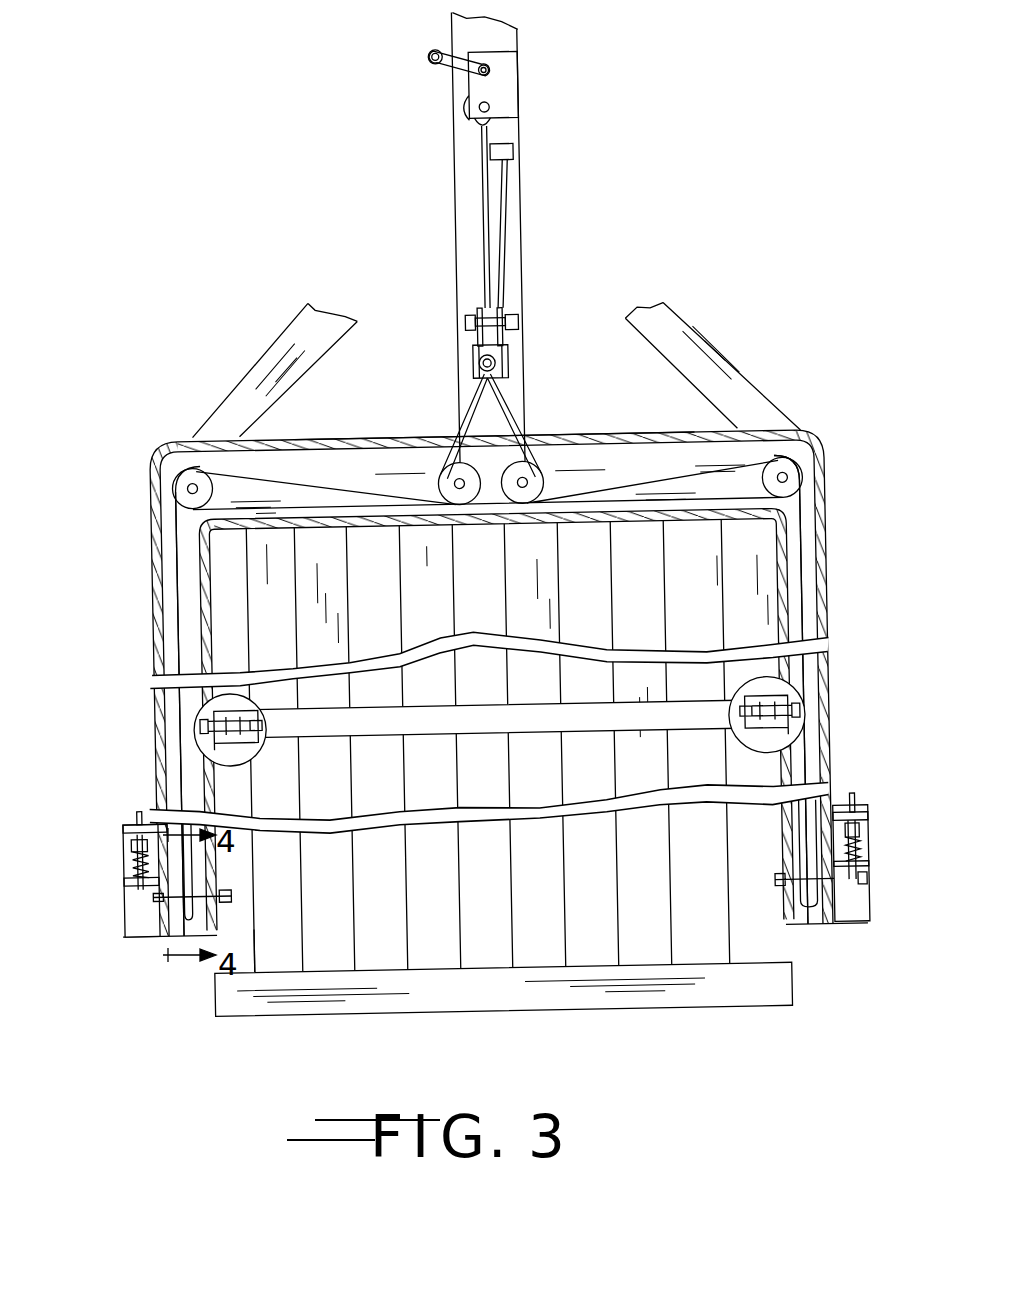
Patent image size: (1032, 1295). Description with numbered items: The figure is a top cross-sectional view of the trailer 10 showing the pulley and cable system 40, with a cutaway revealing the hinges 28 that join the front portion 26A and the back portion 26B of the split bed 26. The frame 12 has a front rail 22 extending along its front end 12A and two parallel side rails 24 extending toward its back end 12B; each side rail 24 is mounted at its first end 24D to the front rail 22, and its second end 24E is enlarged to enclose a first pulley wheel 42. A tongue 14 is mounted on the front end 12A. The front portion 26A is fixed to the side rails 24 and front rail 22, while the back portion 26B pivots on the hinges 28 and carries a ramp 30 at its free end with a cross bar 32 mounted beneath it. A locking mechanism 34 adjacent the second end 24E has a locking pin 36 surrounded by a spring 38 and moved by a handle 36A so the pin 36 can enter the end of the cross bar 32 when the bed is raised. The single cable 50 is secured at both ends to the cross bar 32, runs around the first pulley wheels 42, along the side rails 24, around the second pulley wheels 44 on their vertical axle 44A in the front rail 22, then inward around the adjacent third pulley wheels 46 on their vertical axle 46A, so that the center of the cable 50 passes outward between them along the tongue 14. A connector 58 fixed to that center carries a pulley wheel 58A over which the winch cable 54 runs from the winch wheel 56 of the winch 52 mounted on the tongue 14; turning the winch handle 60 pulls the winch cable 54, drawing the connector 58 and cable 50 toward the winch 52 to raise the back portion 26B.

The trailer 10 is at (260, 210).
The frame 12 is at (152, 497).
The front end of the frame 12A is at (154, 466).
The back end of the frame 12B is at (163, 932).
The tongue 14 is at (510, 44).
The front rail 22 is at (800, 428).
The side rails 24 is at (830, 592).
The first end of the side rail 24D is at (830, 520).
The second end of the side rail 24E is at (848, 922).
The split bed 26 is at (222, 620).
The front portion of the bed 26A is at (238, 572).
The back portion of the bed 26B is at (285, 955).
The hinges 28 is at (215, 722).
The ramp 30 is at (303, 1002).
The cross bar 32 is at (139, 923).
The locking mechanism 34 is at (866, 860).
The locking pin 36 is at (858, 882).
The handle 36A is at (862, 790).
The spring 38 is at (855, 848).
The pulley and cable system 40 is at (303, 478).
The first pulley wheels 42 is at (172, 890).
The second pulley wheels 44 is at (189, 468).
The axle of the second pulley wheels 44A is at (194, 482).
The third pulley wheels 46 is at (452, 472).
The axle of the third pulley wheels 46A is at (524, 472).
The cable 50 is at (158, 650).
The winch 52 is at (508, 90).
The winch cable 54 is at (500, 202).
The winch wheel 56 is at (480, 120).
The connector 58 is at (507, 352).
The pulley wheel of the connector 58A is at (490, 300).
The handle 60 is at (437, 56).